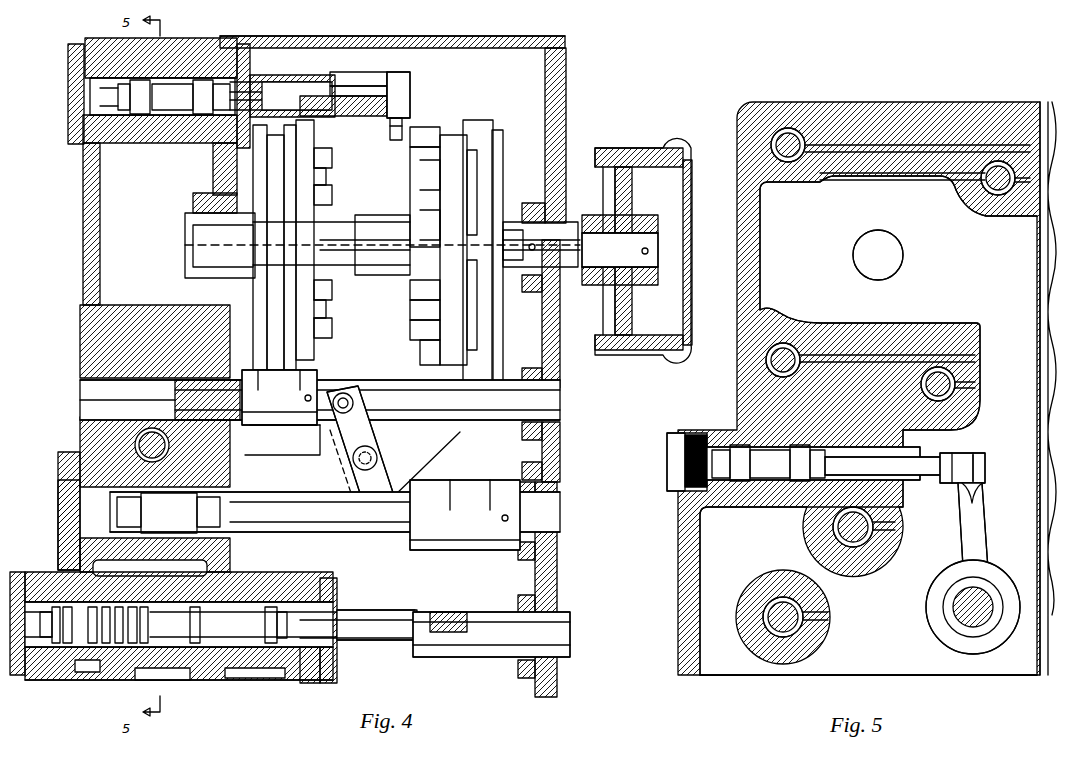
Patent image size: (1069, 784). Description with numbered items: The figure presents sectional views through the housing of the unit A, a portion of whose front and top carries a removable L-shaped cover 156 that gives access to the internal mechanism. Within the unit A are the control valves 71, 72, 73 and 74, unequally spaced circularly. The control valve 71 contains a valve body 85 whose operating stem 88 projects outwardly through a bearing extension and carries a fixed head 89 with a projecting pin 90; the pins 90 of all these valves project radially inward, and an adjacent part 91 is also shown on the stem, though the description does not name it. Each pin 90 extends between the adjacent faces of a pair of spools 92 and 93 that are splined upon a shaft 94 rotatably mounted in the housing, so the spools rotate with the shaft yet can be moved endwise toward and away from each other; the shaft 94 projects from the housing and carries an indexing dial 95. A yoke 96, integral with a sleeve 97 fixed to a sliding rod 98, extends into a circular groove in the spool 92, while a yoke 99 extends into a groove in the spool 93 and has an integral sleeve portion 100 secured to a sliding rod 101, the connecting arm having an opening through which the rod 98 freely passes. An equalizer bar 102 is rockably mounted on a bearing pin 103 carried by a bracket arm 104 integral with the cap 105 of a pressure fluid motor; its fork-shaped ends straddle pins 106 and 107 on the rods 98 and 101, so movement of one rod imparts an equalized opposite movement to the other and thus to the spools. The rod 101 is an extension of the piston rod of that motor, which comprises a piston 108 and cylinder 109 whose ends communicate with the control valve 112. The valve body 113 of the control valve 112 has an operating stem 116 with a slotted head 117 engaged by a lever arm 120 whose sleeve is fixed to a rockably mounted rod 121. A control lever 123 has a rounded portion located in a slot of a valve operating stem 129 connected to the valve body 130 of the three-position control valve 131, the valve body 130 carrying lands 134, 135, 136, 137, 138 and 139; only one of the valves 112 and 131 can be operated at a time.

In FIG. 4, the unit A is at (561, 90).
In FIG. 5, the unit A is at (910, 102).
In FIG. 4, the removable L-shaped cover 156 is at (477, 48).
In FIG. 4, the control valve 72 is at (70, 97).
In FIG. 5, the control valve 72 is at (791, 162).
In FIG. 4, the valve body 85 is at (170, 82).
In FIG. 4, the operating stem 88 is at (272, 92).
In FIG. 4, the spool 92 is at (305, 110).
In FIG. 4, the collar 91 is at (366, 72).
In FIG. 4, the head 89 is at (409, 94).
In FIG. 4, the pin 90 is at (391, 140).
In FIG. 4, the yoke 96 is at (310, 318).
In FIG. 4, the spool 93 is at (458, 134).
In FIG. 4, the yoke 99 is at (482, 332).
In FIG. 4, the shaft 94 is at (366, 222).
In FIG. 4, the indexing dial 95 is at (632, 148).
In FIG. 4, the sliding rod 98 is at (394, 384).
In FIG. 4, the sleeve 97 is at (270, 426).
In FIG. 4, the bracket arm 104 is at (310, 424).
In FIG. 4, the cap 105 is at (256, 474).
In FIG. 4, the control valve 112 is at (150, 428).
In FIG. 5, the control valve 112 is at (713, 424).
In FIG. 4, the equalizer bar 102 is at (368, 430).
In FIG. 4, the pin 106 is at (354, 402).
In FIG. 4, the bearing pin 103 is at (376, 456).
In FIG. 4, the pin 107 is at (383, 522).
In FIG. 4, the sliding rod 101 is at (332, 514).
In FIG. 4, the piston 108 is at (168, 513).
In FIG. 5, the piston 108 is at (838, 534).
In FIG. 4, the cylinder 109 is at (88, 518).
In FIG. 4, the sleeve portion 100 is at (466, 546).
In FIG. 4, the valve body 130 is at (246, 610).
In FIG. 5, the valve body 130 is at (820, 624).
In FIG. 4, the land 139 is at (64, 646).
In FIG. 4, the land 138 is at (74, 644).
In FIG. 4, the land 137 is at (98, 646).
In FIG. 4, the land 136 is at (115, 646).
In FIG. 4, the land 135 is at (194, 644).
In FIG. 4, the land 134 is at (272, 642).
In FIG. 4, the control valve 131 is at (248, 654).
In FIG. 5, the control valve 131 is at (760, 644).
In FIG. 4, the valve operating stem 129 is at (390, 620).
In FIG. 4, the control lever 123 is at (454, 612).
In FIG. 5, the control valve 71 is at (965, 192).
In FIG. 5, the control valve 73 is at (790, 340).
In FIG. 5, the control valve 74 is at (942, 368).
In FIG. 5, the valve body 113 is at (826, 463).
In FIG. 5, the operating stem 116 is at (938, 454).
In FIG. 5, the head 117 is at (988, 461).
In FIG. 5, the lever arm 120 is at (972, 524).
In FIG. 5, the rod 121 is at (958, 614).